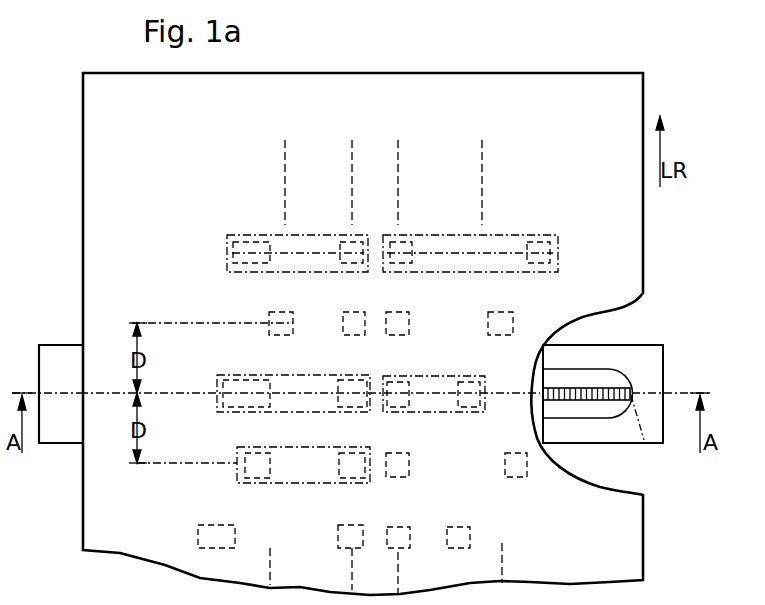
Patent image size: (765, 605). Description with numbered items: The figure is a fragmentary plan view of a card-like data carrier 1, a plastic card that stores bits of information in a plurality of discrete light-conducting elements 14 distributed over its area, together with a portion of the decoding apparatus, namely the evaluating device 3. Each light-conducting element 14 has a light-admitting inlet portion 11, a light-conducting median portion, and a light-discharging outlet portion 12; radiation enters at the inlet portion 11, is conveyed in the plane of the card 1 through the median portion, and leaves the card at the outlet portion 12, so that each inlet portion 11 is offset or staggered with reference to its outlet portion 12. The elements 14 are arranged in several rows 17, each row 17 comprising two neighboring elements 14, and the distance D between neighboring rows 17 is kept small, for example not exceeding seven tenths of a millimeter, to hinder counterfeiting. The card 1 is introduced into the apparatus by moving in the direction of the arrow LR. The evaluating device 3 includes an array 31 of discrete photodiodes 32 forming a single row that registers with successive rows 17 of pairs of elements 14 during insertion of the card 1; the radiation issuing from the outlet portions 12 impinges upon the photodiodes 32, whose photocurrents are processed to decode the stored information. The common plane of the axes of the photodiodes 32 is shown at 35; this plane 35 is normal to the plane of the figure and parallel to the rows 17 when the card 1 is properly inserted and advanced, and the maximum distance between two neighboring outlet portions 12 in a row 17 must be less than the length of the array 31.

The card-like data carrier 1 is at (650, 86).
The evaluating device 3 is at (615, 387).
The light-admitting inlet portion 11 is at (391, 240).
The light-discharging outlet portion 12 is at (233, 253).
The light-conducting element 14 is at (259, 234).
The row 17 is at (312, 249).
The array of photodiodes 31 is at (578, 384).
The photodiode 32 is at (598, 398).
The common plane of the photodiode axes 35 is at (645, 443).